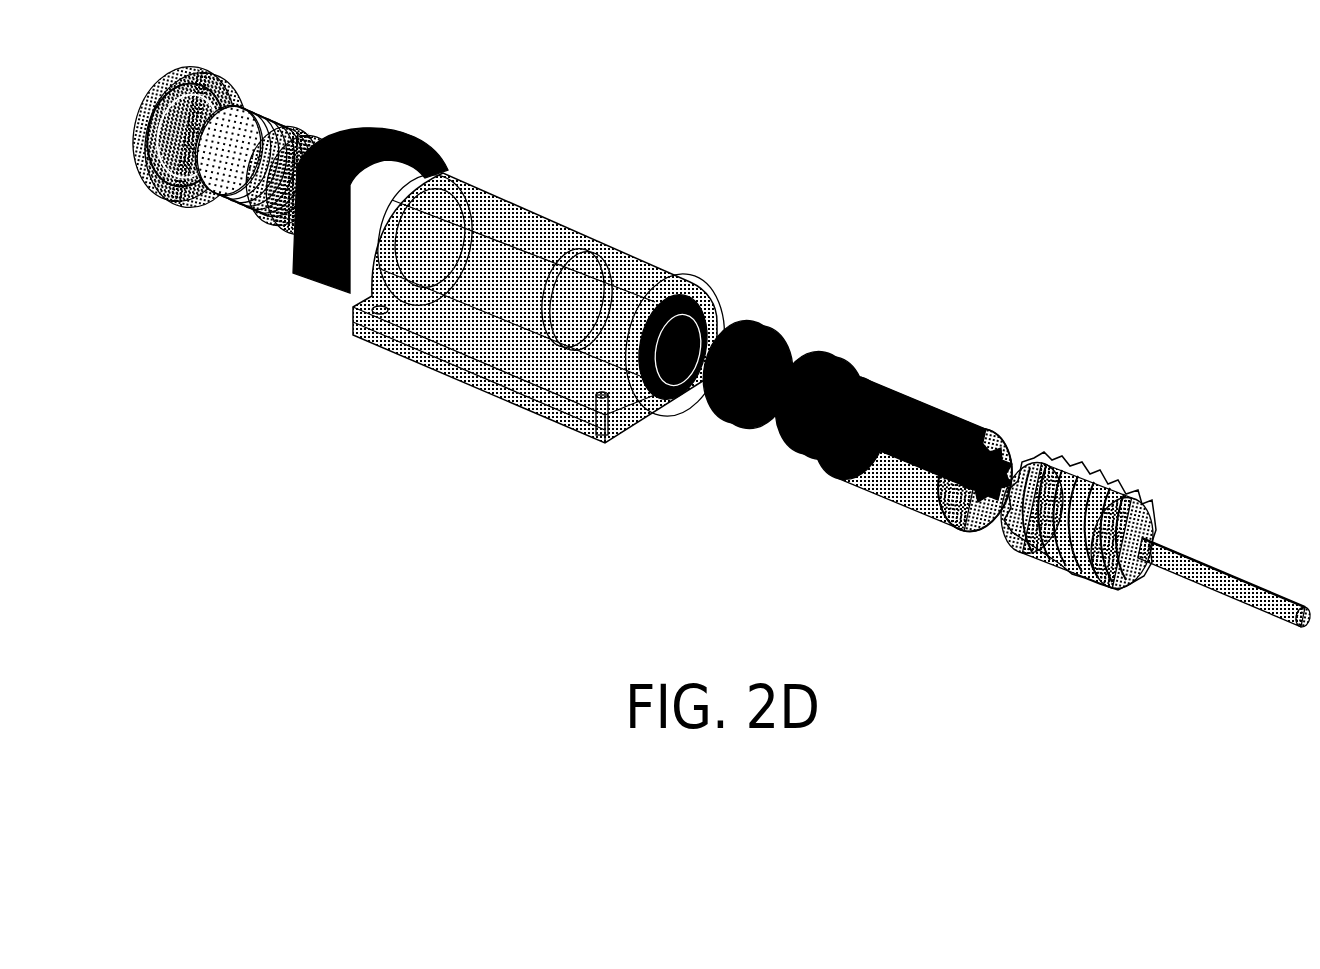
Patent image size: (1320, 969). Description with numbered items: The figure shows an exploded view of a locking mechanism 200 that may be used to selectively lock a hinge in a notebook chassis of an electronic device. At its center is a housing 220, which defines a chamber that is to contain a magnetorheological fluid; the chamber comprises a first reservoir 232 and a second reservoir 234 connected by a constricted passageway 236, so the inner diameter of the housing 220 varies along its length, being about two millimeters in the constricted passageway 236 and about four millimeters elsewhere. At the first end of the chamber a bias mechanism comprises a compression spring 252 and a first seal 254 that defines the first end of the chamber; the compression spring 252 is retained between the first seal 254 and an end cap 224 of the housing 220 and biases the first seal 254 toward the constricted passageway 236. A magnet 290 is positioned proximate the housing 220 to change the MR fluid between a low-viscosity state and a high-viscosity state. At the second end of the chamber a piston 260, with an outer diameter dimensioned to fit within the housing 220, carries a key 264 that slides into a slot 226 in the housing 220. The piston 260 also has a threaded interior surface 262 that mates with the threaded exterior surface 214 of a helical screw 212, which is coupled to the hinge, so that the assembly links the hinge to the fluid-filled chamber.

The locking mechanism 200 is at (456, 82).
The helical screw 212 is at (1187, 553).
The threaded exterior surface 214 is at (1123, 490).
The housing 220 is at (558, 279).
The end cap 224 is at (210, 72).
The slot 226 is at (673, 383).
The first reservoir 232 is at (482, 233).
The second reservoir 234 is at (627, 300).
The constricted passageway 236 is at (547, 300).
The compression spring 252 is at (247, 187).
The first seal 254 is at (277, 203).
The piston 260 is at (948, 460).
The threaded interior surface 262 is at (1007, 443).
The key 264 is at (977, 527).
The magnet 290 is at (367, 153).